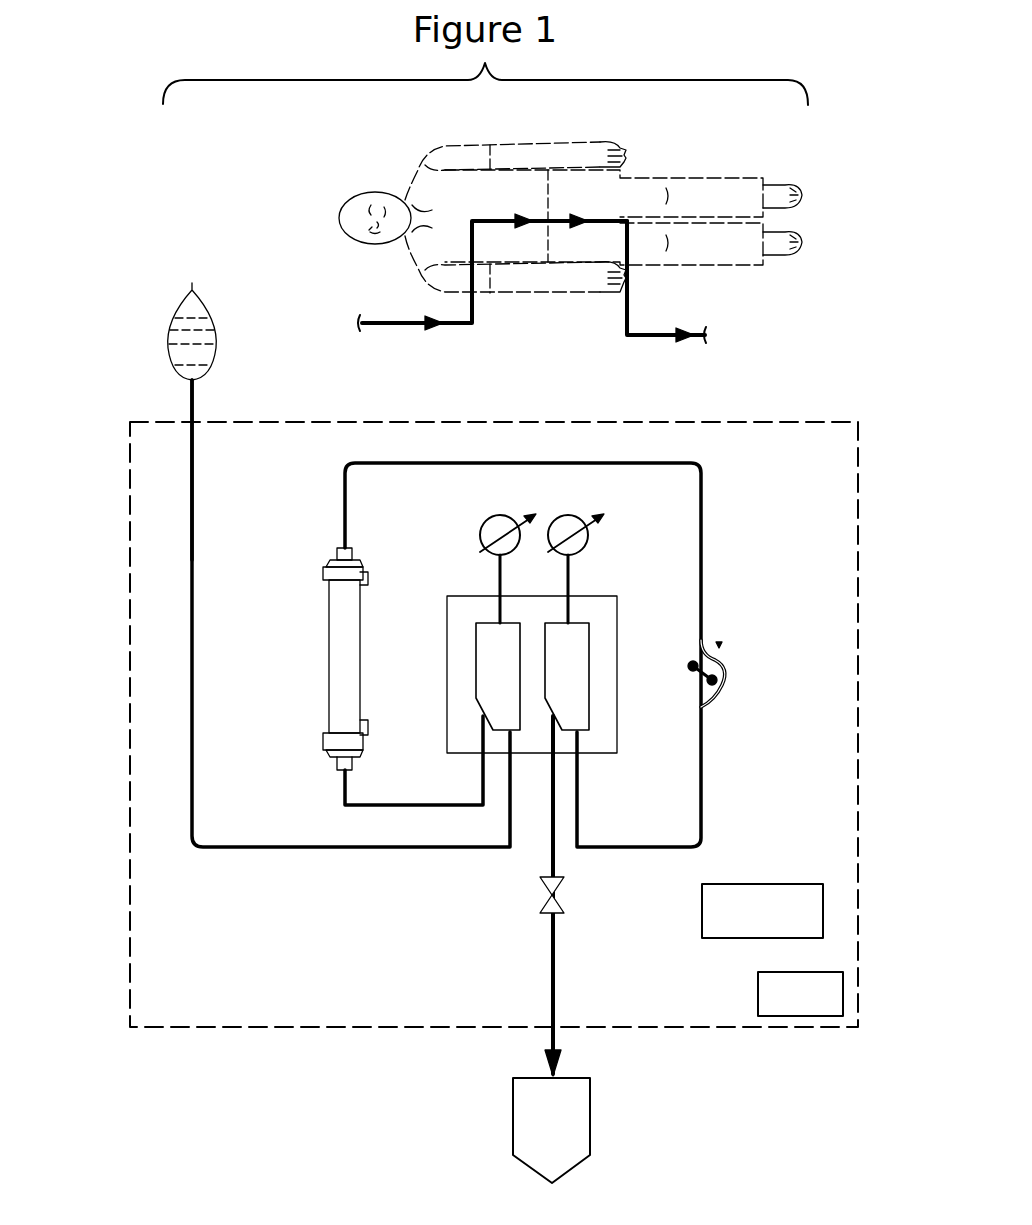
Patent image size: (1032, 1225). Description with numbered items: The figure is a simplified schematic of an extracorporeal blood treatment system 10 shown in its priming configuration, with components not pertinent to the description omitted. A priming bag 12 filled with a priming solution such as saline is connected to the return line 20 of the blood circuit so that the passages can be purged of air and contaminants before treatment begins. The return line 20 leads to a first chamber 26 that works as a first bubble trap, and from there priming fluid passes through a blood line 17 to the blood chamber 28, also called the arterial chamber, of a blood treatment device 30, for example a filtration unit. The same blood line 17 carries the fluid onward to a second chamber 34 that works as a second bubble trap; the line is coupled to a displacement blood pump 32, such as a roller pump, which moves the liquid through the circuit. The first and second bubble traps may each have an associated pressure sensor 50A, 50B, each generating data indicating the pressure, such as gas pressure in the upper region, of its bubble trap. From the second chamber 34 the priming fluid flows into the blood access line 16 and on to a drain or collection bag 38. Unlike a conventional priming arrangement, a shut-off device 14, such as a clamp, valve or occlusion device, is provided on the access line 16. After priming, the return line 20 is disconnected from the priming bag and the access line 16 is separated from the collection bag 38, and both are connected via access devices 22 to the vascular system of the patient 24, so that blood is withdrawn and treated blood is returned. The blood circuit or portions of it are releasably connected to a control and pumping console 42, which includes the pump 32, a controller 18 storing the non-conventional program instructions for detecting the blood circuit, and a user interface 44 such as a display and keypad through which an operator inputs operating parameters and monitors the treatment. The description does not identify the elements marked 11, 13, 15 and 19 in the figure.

The blood treatment system 10 is at (816, 339).
The blood circuit tubing set 11 is at (398, 850).
The priming bag 12 is at (167, 343).
The supply line 13 is at (192, 508).
The shut-off device 14 is at (560, 890).
The tubing line 15 is at (340, 785).
The blood access line 16 is at (685, 340).
The blood line 17 is at (705, 585).
The controller 18 is at (747, 922).
The waste line 19 is at (553, 942).
The return line 20 is at (390, 326).
The access devices 22 is at (585, 215).
The patient 24 is at (528, 150).
The first chamber 26 is at (486, 678).
The blood chamber 28 is at (338, 615).
The blood treatment device 30 is at (360, 682).
The blood pump 32 is at (700, 688).
The second chamber 34 is at (555, 678).
The collection bag 38 is at (539, 1132).
The control and pumping console 42 is at (770, 420).
The user interface 44 is at (787, 1005).
The pressure sensor 50A is at (482, 522).
The pressure sensor 50B is at (550, 522).